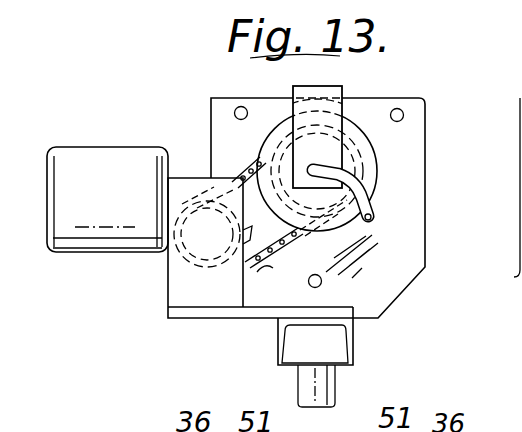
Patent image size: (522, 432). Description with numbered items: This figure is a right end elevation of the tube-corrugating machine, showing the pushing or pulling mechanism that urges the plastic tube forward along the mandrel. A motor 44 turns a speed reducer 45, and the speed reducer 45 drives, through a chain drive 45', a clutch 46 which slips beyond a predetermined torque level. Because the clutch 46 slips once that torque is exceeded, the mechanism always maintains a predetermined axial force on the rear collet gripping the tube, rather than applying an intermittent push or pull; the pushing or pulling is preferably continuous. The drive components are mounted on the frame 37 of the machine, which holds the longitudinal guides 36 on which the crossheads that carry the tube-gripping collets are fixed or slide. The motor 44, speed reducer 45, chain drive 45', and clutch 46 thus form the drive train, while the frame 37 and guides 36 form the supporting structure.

The motor 44 is at (107, 157).
The speed reducer 45 is at (214, 168).
The chain drive 45' is at (267, 228).
The clutch 46 is at (355, 133).
The longitudinal guides 36 is at (266, 91).
The frame 37 is at (353, 332).